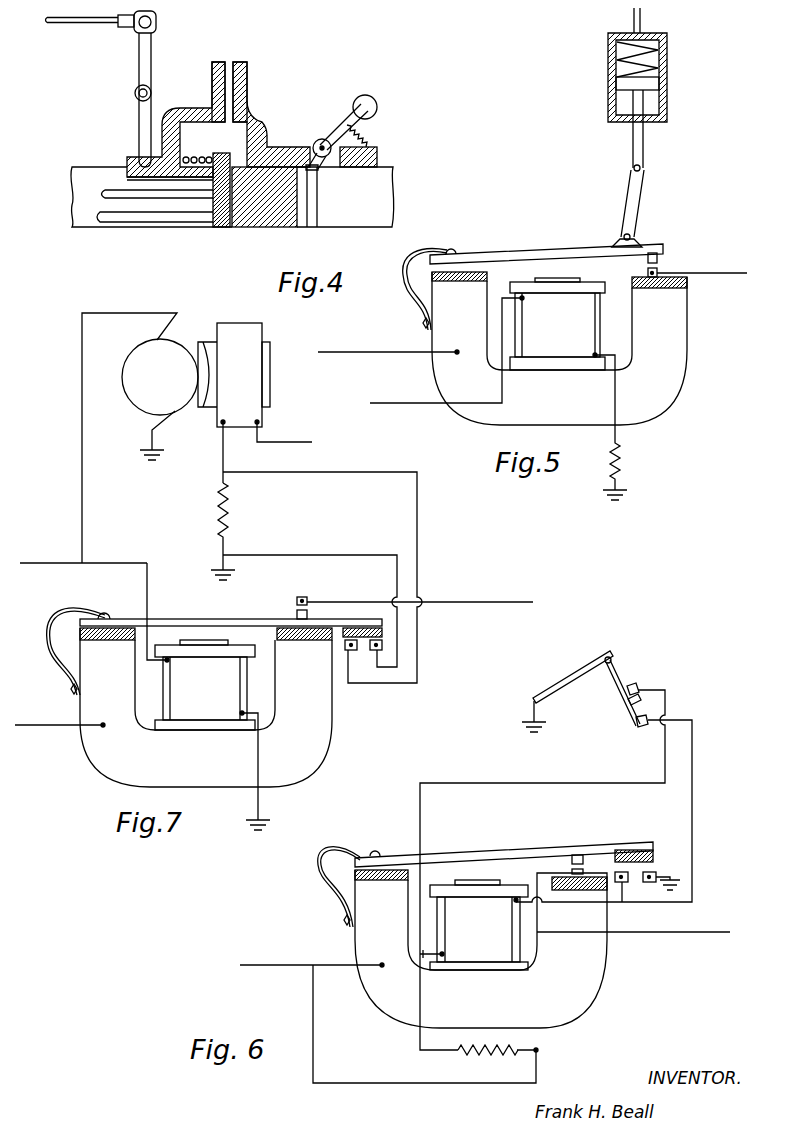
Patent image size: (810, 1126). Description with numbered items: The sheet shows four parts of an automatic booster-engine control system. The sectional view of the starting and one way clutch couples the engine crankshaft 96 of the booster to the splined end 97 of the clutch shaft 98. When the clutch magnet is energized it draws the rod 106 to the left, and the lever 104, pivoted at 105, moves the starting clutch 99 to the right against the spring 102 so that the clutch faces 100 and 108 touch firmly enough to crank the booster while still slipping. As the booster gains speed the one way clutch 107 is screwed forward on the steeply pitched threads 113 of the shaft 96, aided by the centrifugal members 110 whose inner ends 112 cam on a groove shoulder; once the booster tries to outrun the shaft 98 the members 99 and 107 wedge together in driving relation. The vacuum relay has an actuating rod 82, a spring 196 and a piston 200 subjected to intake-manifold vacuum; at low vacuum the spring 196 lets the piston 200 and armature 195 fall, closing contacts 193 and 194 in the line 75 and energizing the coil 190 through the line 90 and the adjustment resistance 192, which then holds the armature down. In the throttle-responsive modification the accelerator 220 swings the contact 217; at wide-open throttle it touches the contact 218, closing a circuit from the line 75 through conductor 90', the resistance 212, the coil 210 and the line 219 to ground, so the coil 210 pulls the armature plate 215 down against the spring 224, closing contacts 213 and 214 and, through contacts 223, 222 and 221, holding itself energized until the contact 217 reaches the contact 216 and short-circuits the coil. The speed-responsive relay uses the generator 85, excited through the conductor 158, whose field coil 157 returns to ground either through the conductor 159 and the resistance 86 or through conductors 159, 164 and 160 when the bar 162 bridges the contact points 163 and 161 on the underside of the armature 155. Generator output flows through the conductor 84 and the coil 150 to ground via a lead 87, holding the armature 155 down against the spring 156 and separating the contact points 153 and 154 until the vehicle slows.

In FIG. 5, the actuating rod 82 is at (640, 18).
In FIG. 7, the conductor 84 is at (80, 455).
In FIG. 7, the generator 85 is at (160, 399).
In FIG. 7, the resistance 86 is at (220, 518).
In FIG. 7, the conductor 87 is at (67, 563).
In FIG. 5, the line 90 is at (446, 367).
In FIG. 6, the conductor 90' is at (489, 903).
In FIG. 5, the line 75 is at (726, 274).
In FIG. 6, the line 75 is at (263, 965).
In FIG. 7, the line 75 is at (55, 725).
In FIG. 4, the engine crankshaft 96 is at (345, 218).
In FIG. 4, the splined end 97 is at (182, 222).
In FIG. 4, the clutch shaft 98 is at (87, 173).
In FIG. 4, the starting clutch 99 is at (212, 88).
In FIG. 4, the clutch face 100 is at (218, 62).
In FIG. 4, the spring 102 is at (200, 157).
In FIG. 4, the lever 104 is at (143, 62).
In FIG. 4, the pivot 105 is at (135, 93).
In FIG. 4, the rod 106 is at (88, 23).
In FIG. 4, the one way clutch 107 is at (247, 80).
In FIG. 4, the clutch face 108 is at (238, 62).
In FIG. 4, the centrifugal members 110 is at (342, 119).
In FIG. 4, the inner ends 112 is at (317, 168).
In FIG. 4, the threads 113 is at (260, 217).
In FIG. 7, the coil 150 is at (235, 688).
In FIG. 7, the contact point 153 is at (307, 600).
In FIG. 7, the contact point 154 is at (297, 613).
In FIG. 7, the armature 155 is at (230, 622).
In FIG. 7, the spring 156 is at (75, 610).
In FIG. 7, the field coil 157 is at (258, 414).
In FIG. 7, the conductor 158 is at (312, 442).
In FIG. 7, the conductor 159 is at (223, 447).
In FIG. 7, the conductor 160 is at (295, 555).
In FIG. 7, the contact point 161 is at (382, 647).
In FIG. 7, the bar 162 is at (382, 638).
In FIG. 7, the contact point 163 is at (352, 648).
In FIG. 7, the conductor 164 is at (415, 509).
In FIG. 5, the coil 190 is at (585, 317).
In FIG. 5, the adjustment resistance 192 is at (622, 461).
In FIG. 5, the contact point 193 is at (660, 270).
In FIG. 5, the contact point 194 is at (662, 253).
In FIG. 5, the armature 195 is at (523, 255).
In FIG. 5, the spring 196 is at (660, 50).
In FIG. 5, the piston 200 is at (657, 85).
In FIG. 6, the coil 210 is at (507, 937).
In FIG. 6, the resistance 212 is at (483, 1053).
In FIG. 6, the contact point 213 is at (585, 871).
In FIG. 6, the contact point 214 is at (573, 857).
In FIG. 6, the armature plate 215 is at (515, 851).
In FIG. 6, the contact 216 is at (633, 687).
In FIG. 6, the contact 217 is at (627, 704).
In FIG. 6, the contact 218 is at (643, 727).
In FIG. 6, the line 219 is at (692, 806).
In FIG. 6, the accelerator 220 is at (613, 653).
In FIG. 6, the contact 221 is at (656, 873).
In FIG. 6, the contact 222 is at (653, 857).
In FIG. 6, the contact 223 is at (624, 883).
In FIG. 6, the spring 224 is at (330, 890).